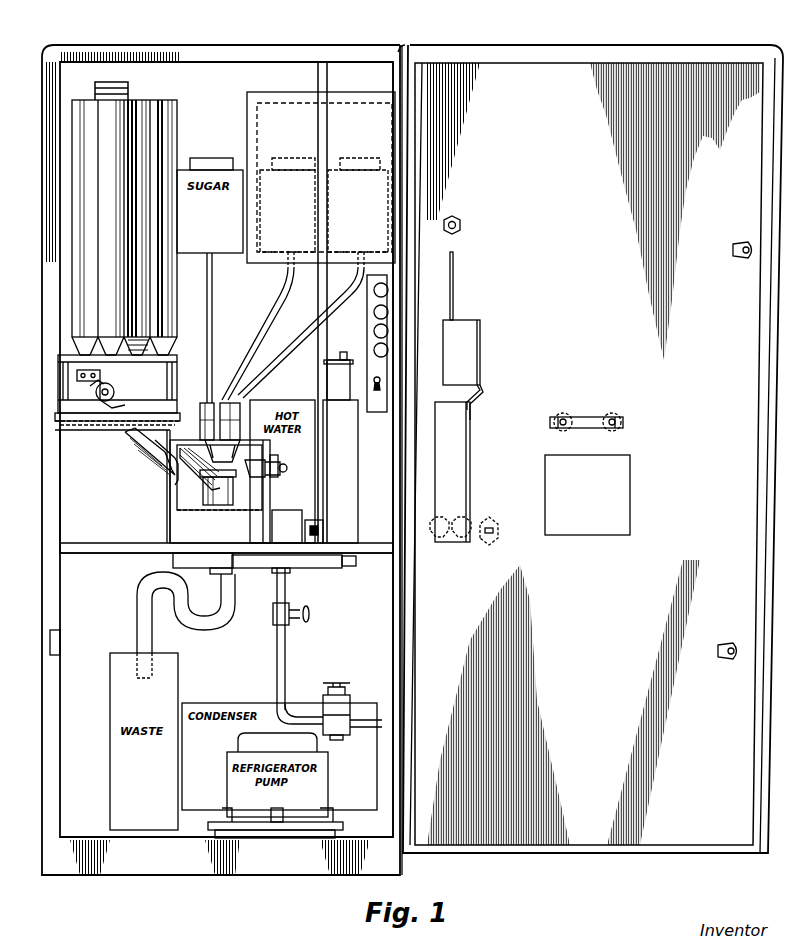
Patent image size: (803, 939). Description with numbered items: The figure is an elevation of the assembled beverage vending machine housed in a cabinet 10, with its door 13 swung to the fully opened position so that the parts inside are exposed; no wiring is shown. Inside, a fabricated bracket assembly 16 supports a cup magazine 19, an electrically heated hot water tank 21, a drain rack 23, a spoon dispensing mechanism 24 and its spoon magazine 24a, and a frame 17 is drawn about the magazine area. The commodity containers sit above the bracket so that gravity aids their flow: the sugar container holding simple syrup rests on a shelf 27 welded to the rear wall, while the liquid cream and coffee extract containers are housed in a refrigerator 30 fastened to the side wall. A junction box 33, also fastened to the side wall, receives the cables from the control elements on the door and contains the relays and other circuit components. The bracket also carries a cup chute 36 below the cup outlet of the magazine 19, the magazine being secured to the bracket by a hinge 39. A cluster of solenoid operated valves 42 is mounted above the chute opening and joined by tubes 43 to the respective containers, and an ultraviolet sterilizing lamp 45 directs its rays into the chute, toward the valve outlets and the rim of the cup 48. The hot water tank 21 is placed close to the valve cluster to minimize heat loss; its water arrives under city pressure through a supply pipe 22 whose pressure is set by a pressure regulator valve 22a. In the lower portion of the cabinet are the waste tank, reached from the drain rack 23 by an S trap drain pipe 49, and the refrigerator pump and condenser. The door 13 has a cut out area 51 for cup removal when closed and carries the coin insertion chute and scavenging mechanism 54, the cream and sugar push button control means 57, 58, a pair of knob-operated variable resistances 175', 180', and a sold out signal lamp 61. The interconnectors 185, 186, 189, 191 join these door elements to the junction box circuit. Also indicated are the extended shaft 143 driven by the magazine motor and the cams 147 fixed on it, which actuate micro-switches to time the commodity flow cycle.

The cabinet 10 is at (234, 45).
The door 13 is at (640, 136).
The bracket assembly 16 is at (135, 556).
The frame 17 is at (178, 356).
The cup magazine 19 is at (180, 120).
The hot water tank 21 is at (349, 437).
The supply pipe 22 is at (366, 728).
The pressure regulator valve 22a is at (360, 678).
The drain rack 23 is at (228, 512).
The spoon dispensing mechanism 24 is at (304, 508).
The spoon magazine 24a is at (318, 362).
The shelf 27 is at (205, 262).
The refrigerator 30 is at (280, 92).
The junction box 33 is at (378, 412).
The cup chute 36 is at (135, 477).
The hinge 39 is at (98, 438).
The cluster of solenoid operated valves 42 is at (200, 414).
The tubes 43 is at (240, 322).
The ultraviolet sterilizing lamp 45 is at (274, 478).
The cup 48 is at (230, 490).
The S trap drain pipe 49 is at (205, 622).
The cut out area 51 is at (580, 530).
The coin insertion chute and scavenging mechanism 54 is at (486, 388).
The push button control means 57 is at (612, 419).
The push button control means 58 is at (564, 419).
The sold out signal lamp 61 is at (455, 222).
The extended shaft 143 is at (98, 392).
The cams 147 is at (114, 390).
The variable resistance 175' is at (547, 432).
The variable resistance 180' is at (634, 430).
The interconnectors 185 is at (389, 348).
The interconnectors 186 is at (389, 328).
The interconnectors 189 is at (389, 310).
The interconnector 191 is at (389, 288).